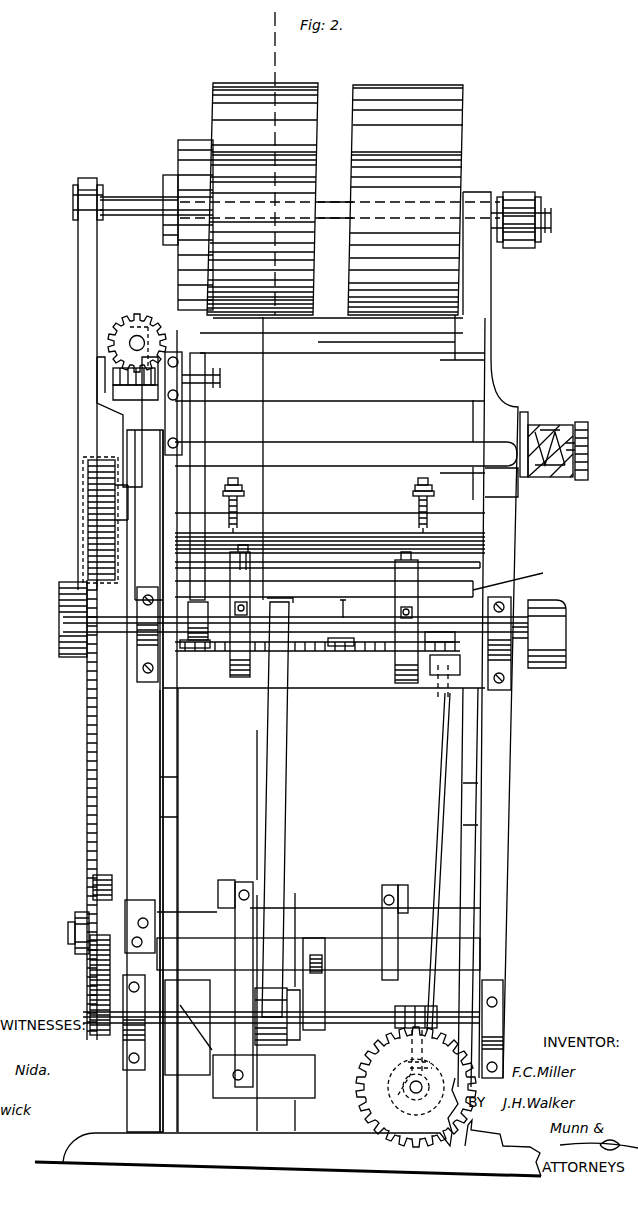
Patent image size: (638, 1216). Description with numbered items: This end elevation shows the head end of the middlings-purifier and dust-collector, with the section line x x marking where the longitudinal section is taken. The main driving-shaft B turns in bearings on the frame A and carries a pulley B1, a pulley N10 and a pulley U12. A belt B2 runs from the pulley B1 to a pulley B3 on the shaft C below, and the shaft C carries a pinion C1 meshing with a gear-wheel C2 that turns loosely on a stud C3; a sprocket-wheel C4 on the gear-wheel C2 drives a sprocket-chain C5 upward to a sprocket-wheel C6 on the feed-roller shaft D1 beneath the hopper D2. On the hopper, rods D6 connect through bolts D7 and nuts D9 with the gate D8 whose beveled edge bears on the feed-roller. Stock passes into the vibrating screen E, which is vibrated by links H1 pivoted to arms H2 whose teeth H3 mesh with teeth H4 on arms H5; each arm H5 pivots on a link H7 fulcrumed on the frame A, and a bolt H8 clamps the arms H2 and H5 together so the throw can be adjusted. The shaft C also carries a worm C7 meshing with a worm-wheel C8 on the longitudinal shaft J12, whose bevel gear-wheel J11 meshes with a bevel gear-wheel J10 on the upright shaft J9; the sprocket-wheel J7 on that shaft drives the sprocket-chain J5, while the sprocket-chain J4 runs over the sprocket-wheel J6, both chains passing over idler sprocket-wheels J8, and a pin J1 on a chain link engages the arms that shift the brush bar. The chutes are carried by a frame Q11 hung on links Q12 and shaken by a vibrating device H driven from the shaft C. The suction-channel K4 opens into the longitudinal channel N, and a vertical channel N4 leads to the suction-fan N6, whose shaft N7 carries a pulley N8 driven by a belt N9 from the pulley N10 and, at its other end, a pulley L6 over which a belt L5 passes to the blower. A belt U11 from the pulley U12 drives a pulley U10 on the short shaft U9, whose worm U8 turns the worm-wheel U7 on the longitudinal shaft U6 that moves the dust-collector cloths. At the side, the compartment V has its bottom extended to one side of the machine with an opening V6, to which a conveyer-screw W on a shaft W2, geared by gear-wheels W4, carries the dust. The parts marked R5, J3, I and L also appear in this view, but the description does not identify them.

The section line x is at (268, 300).
The suction-fan N6 is at (236, 88).
The drum R5 is at (405, 185).
The vertical channel N4 is at (191, 140).
The fan shaft N7 is at (135, 195).
The pulley N8 is at (72, 190).
The belt N9 is at (77, 280).
The belt L5 is at (519, 192).
The pulley L6 is at (540, 205).
The hopper D2 is at (346, 436).
The gate D8 is at (315, 533).
The link H1 is at (250, 572).
The arm H2 is at (250, 587).
The teeth H3 is at (415, 590).
The teeth H4 is at (463, 589).
The vibrating screen E is at (513, 577).
The main driving-shaft B is at (115, 634).
The pulley B1 is at (290, 607).
The sprocket-chain J5 is at (378, 653).
The sprocket-wheel J6 is at (190, 650).
The arm H5 is at (211, 664).
The sprocket-chain J4 is at (310, 653).
The pawl J3 is at (325, 669).
The sprocket-wheel J7 is at (365, 653).
The idler sprocket-wheel J8 is at (341, 658).
The pin J1 is at (441, 639).
The pin I is at (348, 612).
The frame A is at (324, 910).
The suction-channel K4 is at (319, 910).
The nut D9 is at (236, 478).
The rod D6 is at (244, 486).
The bolt D7 is at (240, 512).
The longitudinal shaft U6 is at (130, 318).
The worm-wheel U7 is at (145, 317).
The worm U8 is at (127, 422).
The short shaft U9 is at (188, 372).
The pulley U10 is at (222, 372).
The belt U11 is at (206, 415).
The pulley U12 is at (187, 619).
The feed-roller shaft D1 is at (130, 560).
The compartment V is at (528, 480).
The opening V6 is at (555, 478).
The conveyer-screw W is at (540, 432).
The shaft W2 is at (560, 432).
The gear-wheels W4 is at (589, 425).
The sprocket-wheel C6 is at (87, 512).
The pulley N10 is at (58, 600).
The sprocket-chain C5 is at (85, 800).
The gear-wheel C2 is at (108, 875).
The sprocket-wheel C4 is at (80, 912).
The stud C3 is at (67, 935).
The pinion C1 is at (88, 1000).
The shaft C is at (190, 1012).
The pulley B3 is at (254, 1000).
The worm C7 is at (430, 1006).
The worm-wheel C8 is at (416, 1087).
The bevel gear-wheel J10 is at (432, 1064).
The bevel gear-wheel J11 is at (436, 1090).
The shaft J12 is at (413, 1100).
The upright shaft J9 is at (432, 785).
The link H7 is at (240, 678).
The bolt H8 is at (413, 613).
The belt B2 is at (286, 750).
The link Q12 is at (232, 940).
The vibrating device H is at (326, 990).
The plate L is at (188, 1027).
The chute frame Q11 is at (264, 1076).
The longitudinal channel N is at (290, 1115).